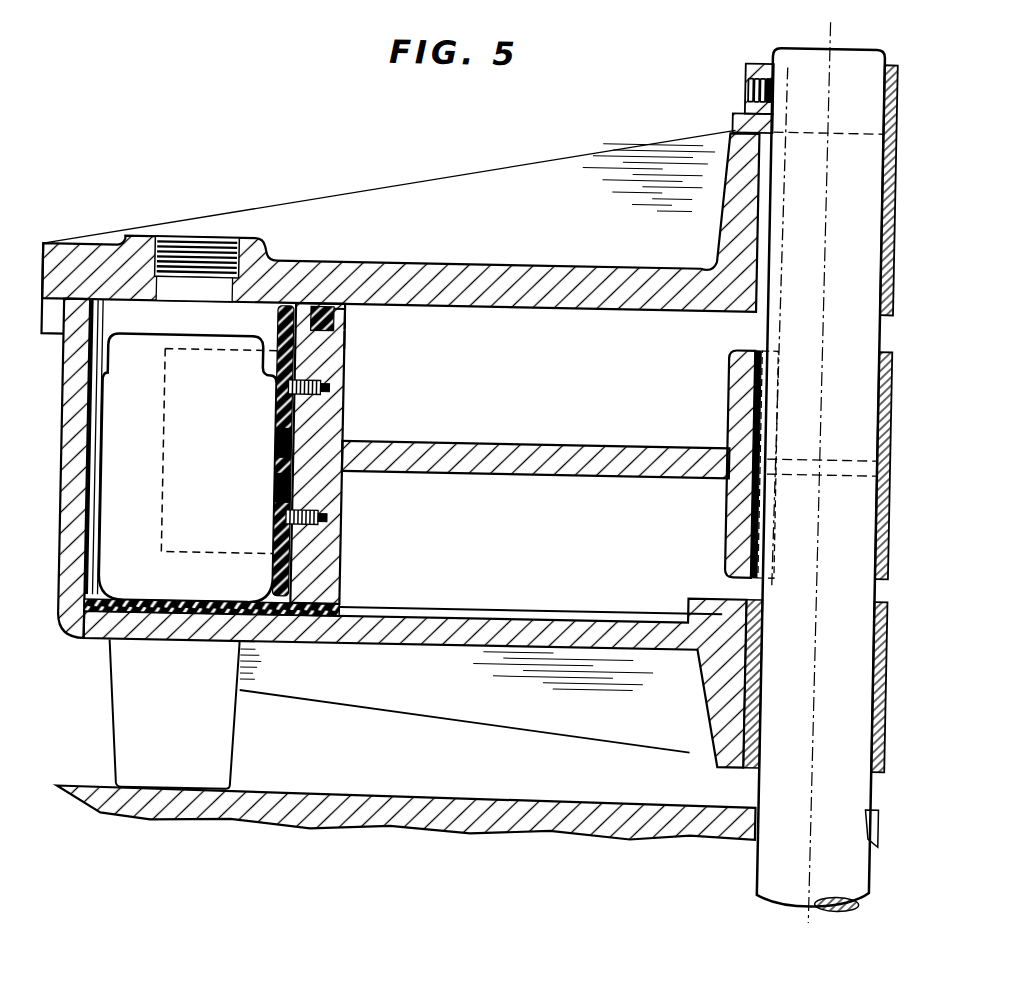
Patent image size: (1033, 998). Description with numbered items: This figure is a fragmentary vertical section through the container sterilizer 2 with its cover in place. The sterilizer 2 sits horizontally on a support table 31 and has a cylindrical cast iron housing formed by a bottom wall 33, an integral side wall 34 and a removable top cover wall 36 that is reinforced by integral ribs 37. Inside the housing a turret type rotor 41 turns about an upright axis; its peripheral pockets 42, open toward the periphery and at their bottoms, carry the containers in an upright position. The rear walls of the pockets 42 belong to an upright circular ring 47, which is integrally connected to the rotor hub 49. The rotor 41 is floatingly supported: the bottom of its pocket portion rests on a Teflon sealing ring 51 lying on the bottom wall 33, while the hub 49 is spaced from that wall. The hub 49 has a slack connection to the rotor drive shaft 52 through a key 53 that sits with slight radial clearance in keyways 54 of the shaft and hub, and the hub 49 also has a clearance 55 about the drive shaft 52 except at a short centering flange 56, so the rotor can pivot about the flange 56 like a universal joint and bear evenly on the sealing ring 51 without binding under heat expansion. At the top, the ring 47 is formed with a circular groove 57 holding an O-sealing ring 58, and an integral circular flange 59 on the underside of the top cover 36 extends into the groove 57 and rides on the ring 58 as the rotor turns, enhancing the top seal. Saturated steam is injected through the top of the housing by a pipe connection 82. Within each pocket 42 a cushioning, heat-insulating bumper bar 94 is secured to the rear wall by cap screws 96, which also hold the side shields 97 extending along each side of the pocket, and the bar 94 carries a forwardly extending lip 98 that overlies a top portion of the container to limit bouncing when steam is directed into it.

The container sterilizer 2 is at (90, 652).
The support table 31 is at (302, 792).
The bottom wall 33 is at (458, 616).
The side wall 34 is at (93, 532).
The top cover wall 36 is at (470, 306).
The integral ribs 37 is at (553, 160).
The rotor 41 is at (430, 442).
The peripheral pockets 42 is at (219, 430).
The circular ring 47 is at (346, 362).
The rotor hub 49 is at (730, 526).
The sealing ring 51 is at (188, 604).
The rotor drive shaft 52 is at (764, 862).
The key 53 is at (755, 374).
The keyways 54 is at (788, 250).
The clearance 55 is at (880, 420).
The centering flange 56 is at (797, 452).
The circular groove 57 is at (346, 319).
The O-sealing ring 58 is at (346, 338).
The circular flange 59 is at (322, 305).
The pipe connections 82 is at (200, 246).
The bumper bar 94 is at (278, 490).
The cap screws 96 is at (332, 389).
The side shield 97 is at (278, 448).
The lip 98 is at (282, 346).